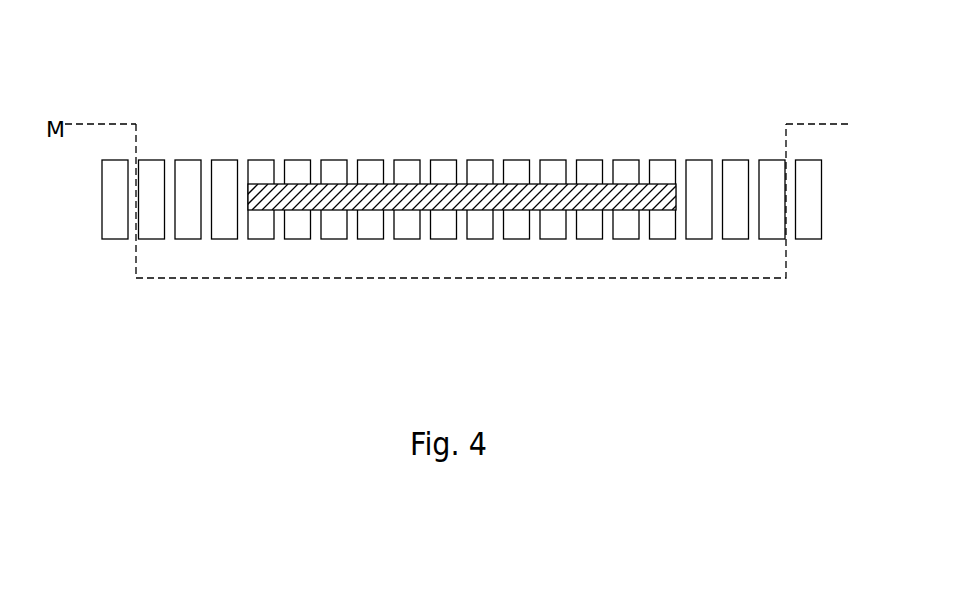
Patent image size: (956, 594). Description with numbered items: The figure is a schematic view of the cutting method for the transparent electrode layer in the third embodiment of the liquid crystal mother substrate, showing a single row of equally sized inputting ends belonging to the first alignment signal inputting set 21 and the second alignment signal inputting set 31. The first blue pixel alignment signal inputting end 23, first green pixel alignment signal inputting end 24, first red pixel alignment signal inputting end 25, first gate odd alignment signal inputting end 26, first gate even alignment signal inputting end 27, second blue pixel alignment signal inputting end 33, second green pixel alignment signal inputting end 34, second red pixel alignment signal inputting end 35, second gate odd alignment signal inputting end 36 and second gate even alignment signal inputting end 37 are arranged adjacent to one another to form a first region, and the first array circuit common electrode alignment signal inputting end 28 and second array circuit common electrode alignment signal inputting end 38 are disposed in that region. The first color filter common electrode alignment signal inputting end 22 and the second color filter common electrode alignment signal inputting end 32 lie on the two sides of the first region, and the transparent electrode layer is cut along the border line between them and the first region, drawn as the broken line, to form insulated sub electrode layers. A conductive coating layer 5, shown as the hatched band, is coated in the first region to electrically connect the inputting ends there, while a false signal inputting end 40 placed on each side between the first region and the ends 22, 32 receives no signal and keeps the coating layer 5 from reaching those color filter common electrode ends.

The conductive coating layer 5 is at (610, 210).
The first alignment signal inputting set 21 is at (448, 60).
The first color filter common electrode alignment signal inputting end 22 is at (115, 166).
The first blue pixel alignment signal inputting end 23 is at (444, 166).
The first green pixel alignment signal inputting end 24 is at (407, 166).
The first red pixel alignment signal inputting end 25 is at (370, 166).
The first gate odd alignment signal inputting end 26 is at (334, 166).
The first gate even alignment signal inputting end 27 is at (298, 166).
The first array circuit common electrode alignment signal inputting end 28 is at (261, 166).
The second alignment signal inputting set 31 is at (803, 60).
The second color filter common electrode alignment signal inputting end 32 is at (808, 166).
The second blue pixel alignment signal inputting end 33 is at (480, 166).
The second green pixel alignment signal inputting end 34 is at (516, 166).
The second red pixel alignment signal inputting end 35 is at (553, 166).
The second gate odd alignment signal inputting end 36 is at (590, 166).
The second gate even alignment signal inputting end 37 is at (626, 166).
The second array circuit common electrode alignment signal inputting end 38 is at (662, 166).
The false signal inputting end 40 is at (188, 166).